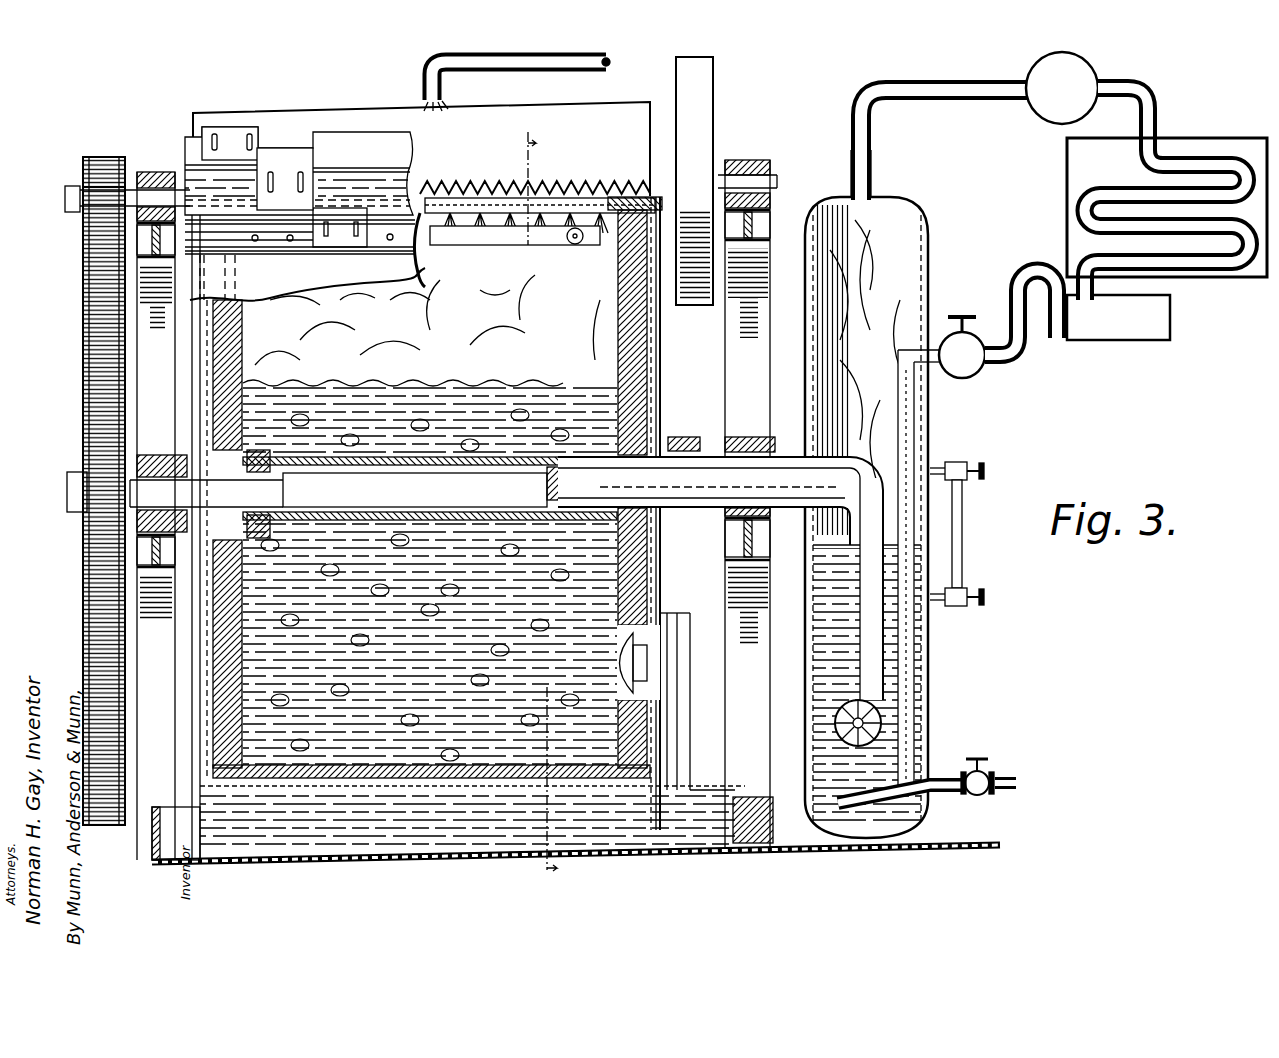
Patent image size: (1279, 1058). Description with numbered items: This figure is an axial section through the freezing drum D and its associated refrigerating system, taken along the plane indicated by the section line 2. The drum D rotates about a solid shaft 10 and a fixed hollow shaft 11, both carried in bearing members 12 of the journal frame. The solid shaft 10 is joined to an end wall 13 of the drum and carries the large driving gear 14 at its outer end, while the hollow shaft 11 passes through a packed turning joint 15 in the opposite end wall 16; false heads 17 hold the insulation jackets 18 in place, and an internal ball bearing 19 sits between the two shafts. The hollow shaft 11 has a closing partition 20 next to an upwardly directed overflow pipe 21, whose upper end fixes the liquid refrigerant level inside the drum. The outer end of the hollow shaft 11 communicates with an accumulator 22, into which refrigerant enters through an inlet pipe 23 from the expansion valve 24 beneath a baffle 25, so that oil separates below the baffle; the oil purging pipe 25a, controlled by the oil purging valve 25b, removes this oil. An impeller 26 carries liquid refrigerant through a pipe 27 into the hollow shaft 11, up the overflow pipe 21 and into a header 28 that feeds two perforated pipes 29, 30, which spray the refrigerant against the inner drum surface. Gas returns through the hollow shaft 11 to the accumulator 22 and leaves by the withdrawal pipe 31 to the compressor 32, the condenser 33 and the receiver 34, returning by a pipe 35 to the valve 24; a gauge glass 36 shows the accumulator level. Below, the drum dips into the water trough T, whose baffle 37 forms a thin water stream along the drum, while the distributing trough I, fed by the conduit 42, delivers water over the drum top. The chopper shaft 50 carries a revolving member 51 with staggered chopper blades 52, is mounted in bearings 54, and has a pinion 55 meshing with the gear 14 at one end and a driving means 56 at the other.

The solid shaft 10 is at (175, 492).
The hollow shaft 11 is at (430, 488).
The bearing members 12 is at (165, 450).
The end wall 13 is at (233, 418).
The large driving gear 14 is at (90, 378).
The packed turning joint 15 is at (678, 445).
The end wall 16 is at (633, 386).
The false heads 17 is at (207, 362).
The insulation jackets 18 is at (233, 335).
The internal ball bearing 19 is at (253, 456).
The closing partition 20 is at (546, 486).
The overflow pipe 21 is at (545, 378).
The accumulator 22 is at (905, 240).
The inlet pipe 23 is at (943, 322).
The expansion valve 24 is at (963, 367).
The baffle 25 is at (937, 753).
The oil purging pipe 25a is at (947, 797).
The oil purging valve 25b is at (1000, 775).
The impeller 26 is at (937, 690).
The pipe 27 is at (930, 580).
The header 28 is at (583, 225).
The pipe 29 is at (515, 251).
The pipe 30 is at (472, 233).
The gaseous refrigerant withdrawal pipe 31 is at (928, 97).
The compressor 32 is at (1062, 88).
The condenser 33 is at (1198, 145).
The receiver 34 is at (1163, 328).
The pipe 35 is at (1028, 275).
The gauge glass 36 is at (962, 520).
The baffle 37 is at (465, 797).
The conduit 42 is at (517, 67).
The shaft 50 is at (75, 213).
The revolving member 51 is at (347, 142).
The chopper blades 52 is at (270, 152).
The bearings 54 is at (160, 168).
The pinion 55 is at (80, 163).
The operating means 56 is at (703, 68).
The water distributing trough I is at (620, 108).
The freezing drum D is at (373, 760).
The water trough T is at (660, 778).
The section line 2 is at (541, 503).